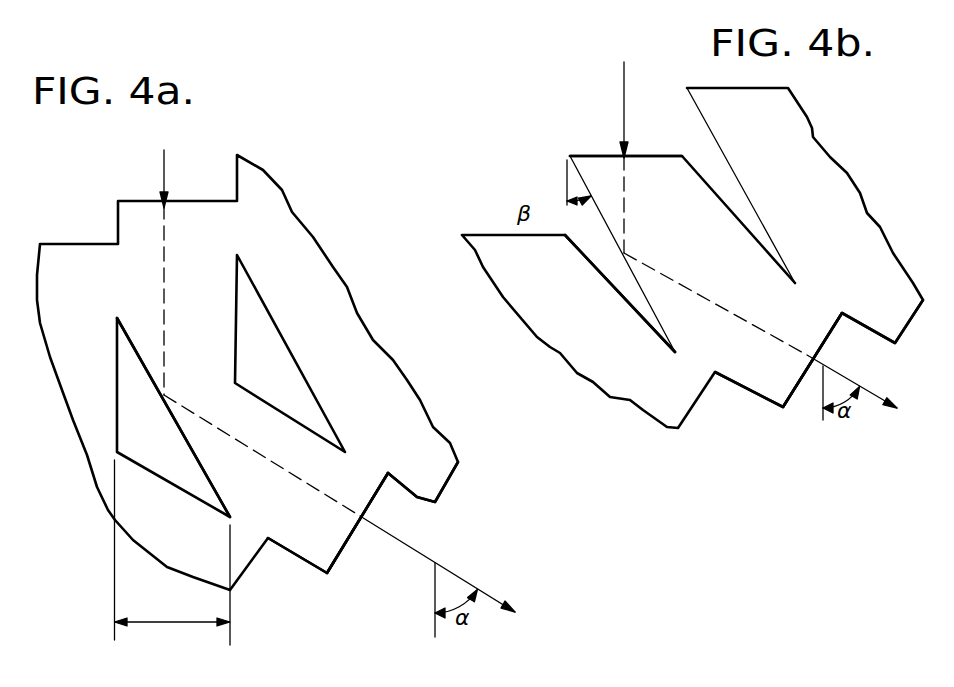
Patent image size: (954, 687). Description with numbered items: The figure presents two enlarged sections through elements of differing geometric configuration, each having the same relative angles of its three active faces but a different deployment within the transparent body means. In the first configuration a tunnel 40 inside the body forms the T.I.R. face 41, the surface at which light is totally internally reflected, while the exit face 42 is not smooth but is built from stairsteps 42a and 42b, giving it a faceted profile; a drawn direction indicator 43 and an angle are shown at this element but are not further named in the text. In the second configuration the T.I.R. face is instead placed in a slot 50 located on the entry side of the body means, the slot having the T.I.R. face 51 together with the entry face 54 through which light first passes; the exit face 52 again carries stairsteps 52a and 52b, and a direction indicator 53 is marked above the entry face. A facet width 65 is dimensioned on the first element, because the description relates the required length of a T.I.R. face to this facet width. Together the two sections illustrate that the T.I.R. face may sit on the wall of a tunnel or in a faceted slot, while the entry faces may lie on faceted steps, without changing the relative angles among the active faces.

In FIG. 4a, the tunnel 40 is at (131, 425).
In FIG. 4a, the T.I.R. face 41 is at (192, 449).
In FIG. 4a, the exit face 42 is at (361, 557).
In FIG. 4a, the stairstep 42a is at (330, 572).
In FIG. 4a, the stairstep 42b is at (418, 498).
In FIG. 4a, the feed direction arrow 43 is at (164, 170).
In FIG. 4a, the facet width 65 is at (173, 552).
In FIG. 4b, the slot 50 is at (613, 277).
In FIG. 4b, the T.I.R. face 51 is at (648, 299).
In FIG. 4b, the exit face 52 is at (832, 355).
In FIG. 4b, the stairstep 52a is at (786, 407).
In FIG. 4b, the stairstep 52b is at (857, 327).
In FIG. 4b, the feed direction arrow 53 is at (623, 80).
In FIG. 4b, the entry face 54 is at (657, 157).